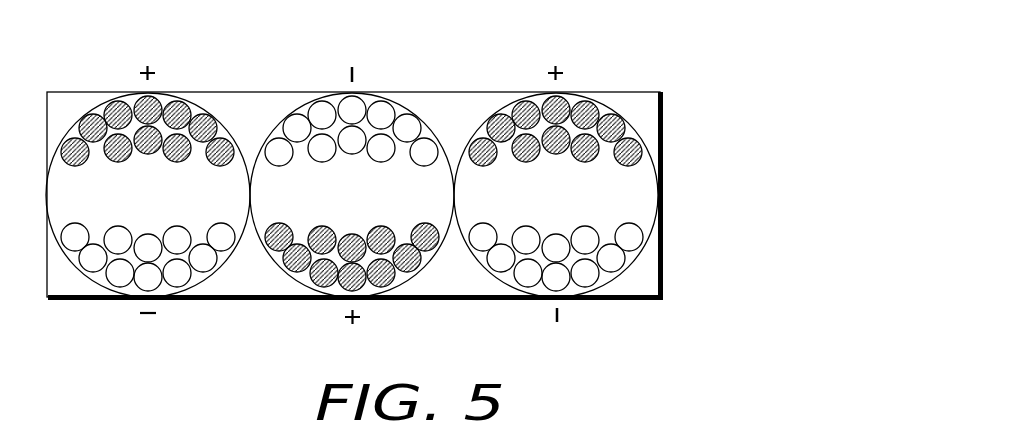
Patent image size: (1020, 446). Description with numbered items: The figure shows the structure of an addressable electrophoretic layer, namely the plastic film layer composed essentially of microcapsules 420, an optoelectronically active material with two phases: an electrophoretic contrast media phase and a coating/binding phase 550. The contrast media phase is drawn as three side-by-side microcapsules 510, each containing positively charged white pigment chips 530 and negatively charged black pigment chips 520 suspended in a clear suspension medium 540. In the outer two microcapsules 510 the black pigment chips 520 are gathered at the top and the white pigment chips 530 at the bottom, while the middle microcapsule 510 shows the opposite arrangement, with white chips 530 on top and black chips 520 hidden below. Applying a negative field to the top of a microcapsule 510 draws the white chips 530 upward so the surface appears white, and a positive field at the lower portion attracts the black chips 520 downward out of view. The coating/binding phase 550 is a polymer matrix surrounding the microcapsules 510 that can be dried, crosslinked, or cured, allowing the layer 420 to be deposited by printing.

The plastic film layer composed essentially of microcapsules 420 is at (808, 288).
The microcapsule 510 is at (96, 104).
The negatively charged black pigment chip 520 is at (186, 108).
The positively charged white pigment chip 530 is at (383, 114).
The clear suspension medium 540 is at (645, 193).
The coating/binding phase 550 is at (647, 281).